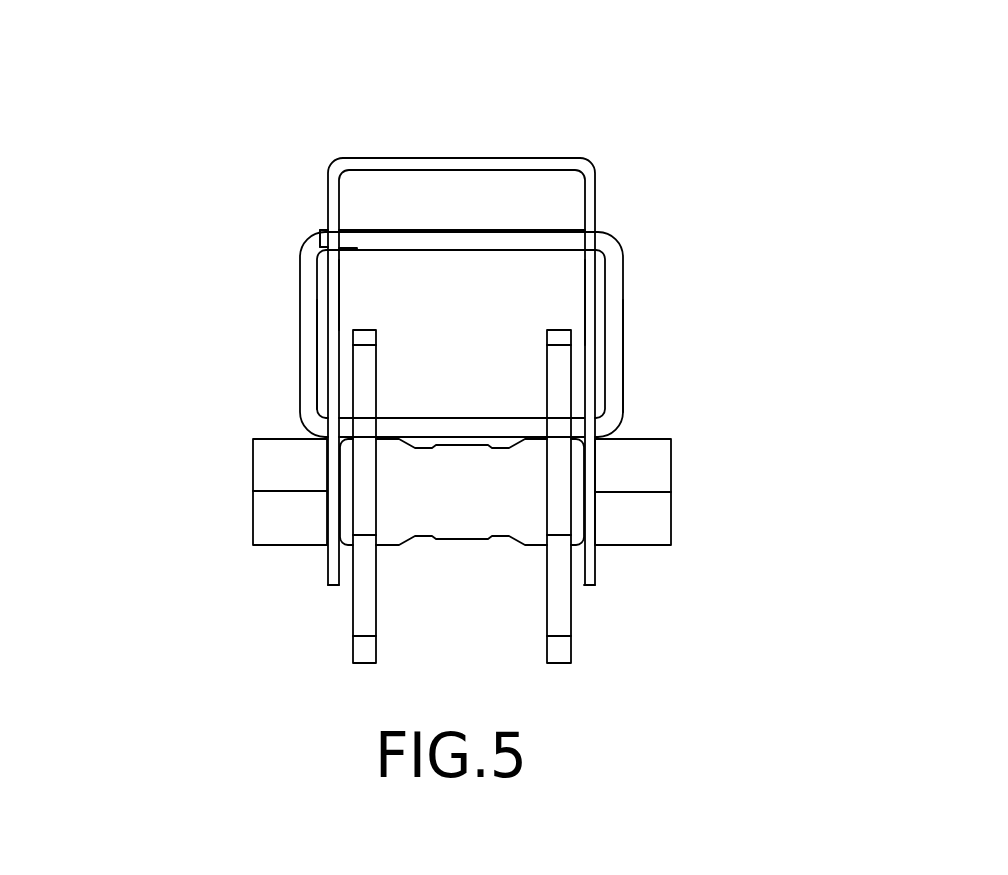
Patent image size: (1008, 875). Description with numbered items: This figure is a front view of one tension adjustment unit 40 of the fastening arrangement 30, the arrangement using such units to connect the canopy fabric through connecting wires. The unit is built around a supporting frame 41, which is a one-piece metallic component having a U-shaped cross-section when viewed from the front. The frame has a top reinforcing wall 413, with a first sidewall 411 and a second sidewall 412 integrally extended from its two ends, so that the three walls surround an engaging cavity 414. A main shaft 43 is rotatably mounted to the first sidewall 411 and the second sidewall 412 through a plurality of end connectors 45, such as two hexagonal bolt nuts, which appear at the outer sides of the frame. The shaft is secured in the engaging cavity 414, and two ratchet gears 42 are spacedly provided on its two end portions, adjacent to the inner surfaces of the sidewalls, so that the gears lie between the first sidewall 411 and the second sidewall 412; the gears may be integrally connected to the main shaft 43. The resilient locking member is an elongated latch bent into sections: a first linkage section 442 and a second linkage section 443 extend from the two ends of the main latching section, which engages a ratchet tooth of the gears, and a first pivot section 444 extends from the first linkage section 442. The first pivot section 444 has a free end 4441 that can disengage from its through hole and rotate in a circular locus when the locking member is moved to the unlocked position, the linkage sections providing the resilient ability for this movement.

The fastening arrangement 30 is at (306, 174).
The tension adjustment unit 40 is at (637, 288).
The supporting frame 41 is at (552, 143).
The first sidewall 411 is at (588, 337).
The second sidewall 412 is at (337, 316).
The top reinforcing wall 413 is at (410, 240).
The engaging cavity 414 is at (482, 300).
The ratchet gear 42 is at (368, 617).
The main shaft 43 is at (460, 480).
The first linkage section 442 is at (608, 353).
The second linkage section 443 is at (316, 332).
The first pivot section 444 is at (450, 238).
The free end 4441 is at (320, 230).
The end connector 45 is at (302, 525).